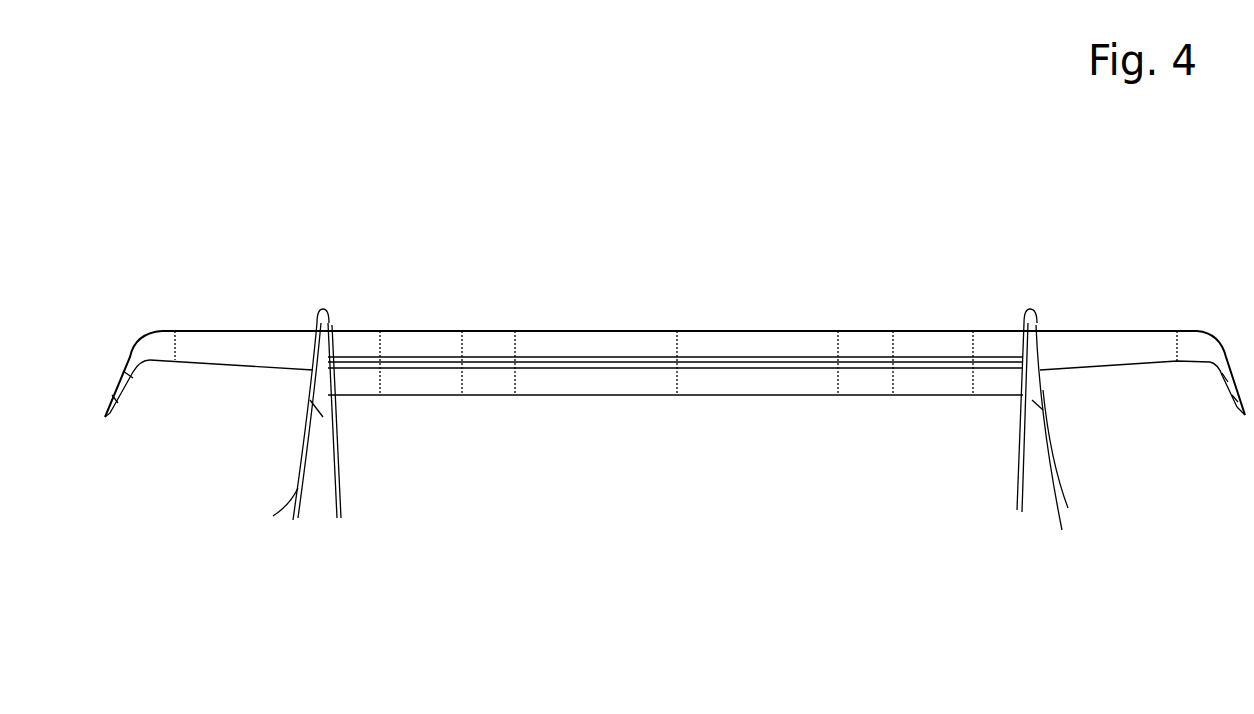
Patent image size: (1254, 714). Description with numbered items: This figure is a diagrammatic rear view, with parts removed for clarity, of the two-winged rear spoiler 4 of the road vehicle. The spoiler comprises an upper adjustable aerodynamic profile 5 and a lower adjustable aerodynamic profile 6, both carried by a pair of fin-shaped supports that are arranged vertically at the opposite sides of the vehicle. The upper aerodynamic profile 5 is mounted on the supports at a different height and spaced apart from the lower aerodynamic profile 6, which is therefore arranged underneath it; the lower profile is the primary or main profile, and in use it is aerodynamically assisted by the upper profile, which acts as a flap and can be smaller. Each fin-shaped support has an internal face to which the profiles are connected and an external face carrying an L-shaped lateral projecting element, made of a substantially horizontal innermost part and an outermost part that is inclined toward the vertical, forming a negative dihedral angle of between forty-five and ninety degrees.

The rear spoiler 4 is at (675, 437).
The upper adjustable aerodynamic profile 5 is at (728, 339).
The lower adjustable aerodynamic profile 6 is at (615, 380).